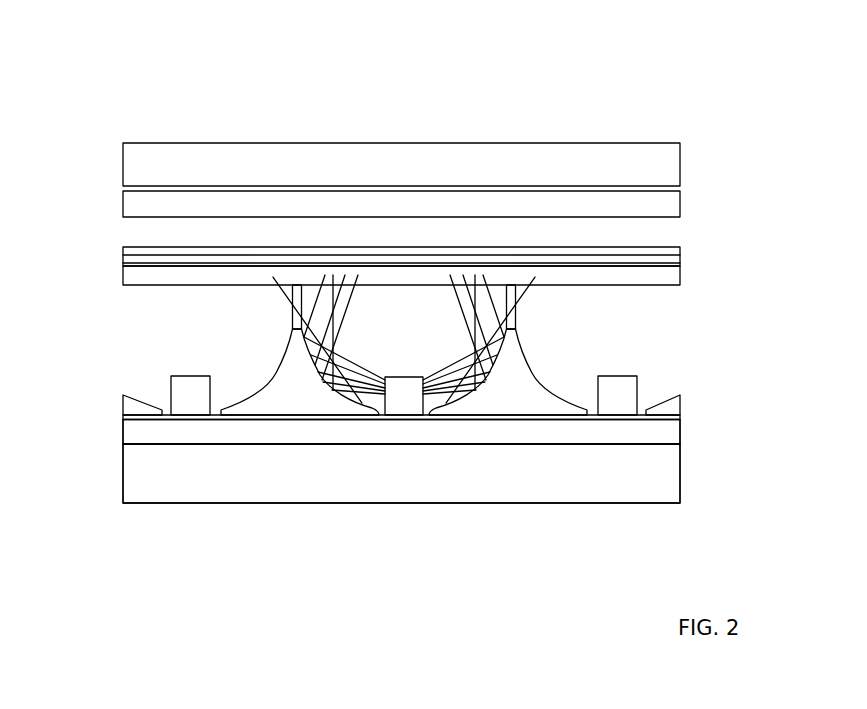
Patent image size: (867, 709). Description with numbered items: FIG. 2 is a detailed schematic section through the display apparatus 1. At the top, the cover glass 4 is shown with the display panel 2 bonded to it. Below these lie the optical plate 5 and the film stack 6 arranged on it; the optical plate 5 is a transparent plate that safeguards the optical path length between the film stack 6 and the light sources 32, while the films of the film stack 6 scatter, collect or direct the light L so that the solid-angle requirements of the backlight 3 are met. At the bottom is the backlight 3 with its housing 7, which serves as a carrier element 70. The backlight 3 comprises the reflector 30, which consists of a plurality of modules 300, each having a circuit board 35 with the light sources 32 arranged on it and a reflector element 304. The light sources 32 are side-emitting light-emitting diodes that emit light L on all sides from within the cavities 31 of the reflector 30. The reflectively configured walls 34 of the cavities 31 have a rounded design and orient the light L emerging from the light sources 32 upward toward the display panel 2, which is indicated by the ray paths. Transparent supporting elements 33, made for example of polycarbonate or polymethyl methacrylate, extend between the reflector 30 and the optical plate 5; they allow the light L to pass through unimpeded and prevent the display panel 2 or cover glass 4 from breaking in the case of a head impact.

The display apparatus 1 is at (232, 118).
The display panel 2 is at (128, 203).
The backlight 3 is at (421, 505).
The cover glass 4 is at (673, 163).
The optical plate 5 is at (670, 282).
The film stack 6 is at (677, 247).
The housing 7 is at (393, 497).
The carrier element 70 is at (200, 493).
The reflector 30 is at (160, 352).
The cavities 31 is at (604, 341).
The light sources 32 is at (403, 408).
The supporting elements 33 is at (516, 313).
The walls 34 is at (273, 380).
The circuit board 35 is at (672, 430).
The modules 300 is at (320, 445).
The reflector element 304 is at (512, 395).
The light L is at (357, 358).